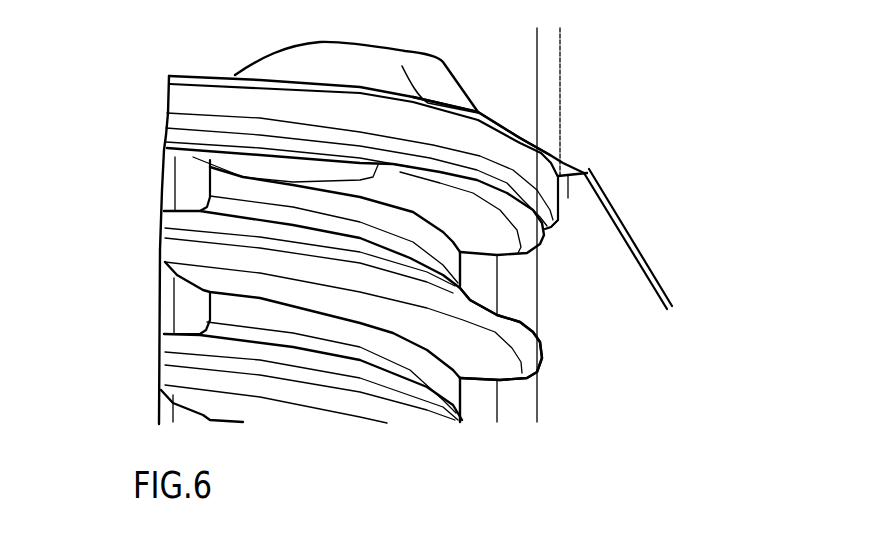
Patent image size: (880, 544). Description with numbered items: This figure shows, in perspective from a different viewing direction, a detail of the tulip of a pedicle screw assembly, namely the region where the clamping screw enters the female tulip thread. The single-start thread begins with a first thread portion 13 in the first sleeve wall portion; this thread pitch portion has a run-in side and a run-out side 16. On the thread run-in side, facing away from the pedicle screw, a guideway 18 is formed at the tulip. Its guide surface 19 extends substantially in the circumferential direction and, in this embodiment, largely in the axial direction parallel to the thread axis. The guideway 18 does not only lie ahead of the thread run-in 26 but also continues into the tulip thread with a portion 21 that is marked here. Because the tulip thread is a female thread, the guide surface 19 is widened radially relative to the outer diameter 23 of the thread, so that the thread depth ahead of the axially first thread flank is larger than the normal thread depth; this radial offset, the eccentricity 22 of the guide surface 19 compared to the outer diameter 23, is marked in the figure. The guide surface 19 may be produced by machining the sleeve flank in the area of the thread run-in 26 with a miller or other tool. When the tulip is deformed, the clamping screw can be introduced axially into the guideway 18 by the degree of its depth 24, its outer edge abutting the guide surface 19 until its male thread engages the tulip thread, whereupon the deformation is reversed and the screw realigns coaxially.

The first thread portion 13 is at (522, 342).
The run-out side 16 is at (580, 277).
The guideway 18 is at (148, 92).
The guide surface 19 is at (498, 140).
The portion 21 is at (240, 177).
The eccentricity 22 is at (524, 55).
The outer diameter 23 is at (527, 398).
The depth 24 is at (568, 198).
The thread run-in 26 is at (584, 172).